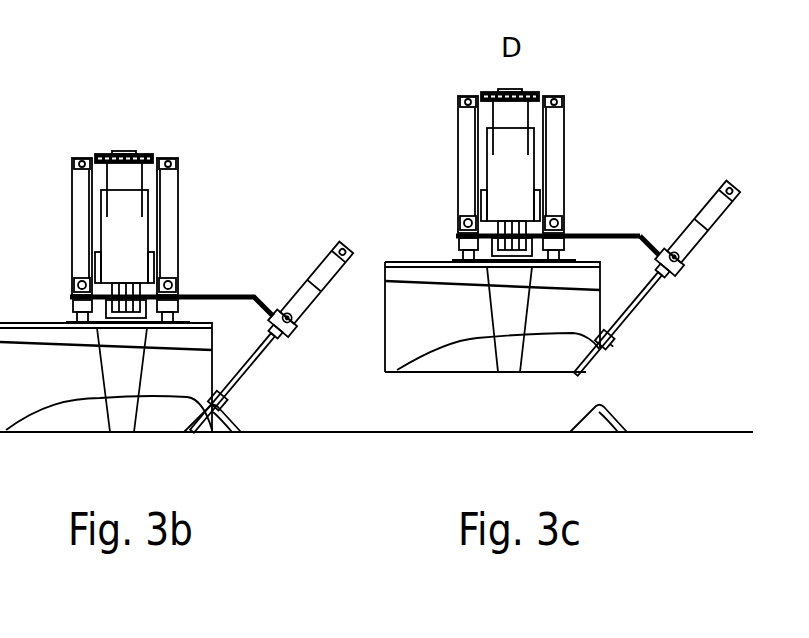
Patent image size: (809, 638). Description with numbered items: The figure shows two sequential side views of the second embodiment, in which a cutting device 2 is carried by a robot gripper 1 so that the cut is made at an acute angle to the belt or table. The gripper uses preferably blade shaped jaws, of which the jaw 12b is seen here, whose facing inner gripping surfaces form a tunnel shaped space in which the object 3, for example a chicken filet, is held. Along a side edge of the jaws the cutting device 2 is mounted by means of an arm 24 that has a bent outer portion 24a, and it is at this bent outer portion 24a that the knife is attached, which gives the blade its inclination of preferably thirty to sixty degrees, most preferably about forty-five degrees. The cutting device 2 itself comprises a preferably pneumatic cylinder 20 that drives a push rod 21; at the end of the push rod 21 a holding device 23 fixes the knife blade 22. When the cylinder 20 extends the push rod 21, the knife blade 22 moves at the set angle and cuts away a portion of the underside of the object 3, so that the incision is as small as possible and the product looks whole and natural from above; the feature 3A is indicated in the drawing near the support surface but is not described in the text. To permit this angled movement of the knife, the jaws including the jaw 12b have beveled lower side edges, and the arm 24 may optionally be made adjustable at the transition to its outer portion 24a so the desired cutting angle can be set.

In FIG. 3b, the robot gripper 1 is at (53, 208).
In FIG. 3c, the robot gripper 1 is at (432, 137).
In FIG. 3b, the cutting device 2 is at (276, 310).
In FIG. 3c, the cutting device 2 is at (648, 230).
In FIG. 3c, the object 3 is at (477, 352).
In FIG. 3c, the obstacle / bump on floor 3A is at (598, 413).
In FIG. 3c, the jaw 12b is at (403, 343).
In FIG. 3b, the cylinder 20 is at (313, 288).
In FIG. 3c, the cylinder 20 is at (694, 236).
In FIG. 3b, the push rod 21 is at (245, 374).
In FIG. 3c, the push rod 21 is at (648, 293).
In FIG. 3b, the knife blade 22 is at (227, 413).
In FIG. 3c, the knife blade 22 is at (590, 360).
In FIG. 3c, the holding device 23 is at (624, 350).
In FIG. 3c, the arm 24 is at (581, 230).
In FIG. 3c, the bent outer portion 24a is at (651, 247).